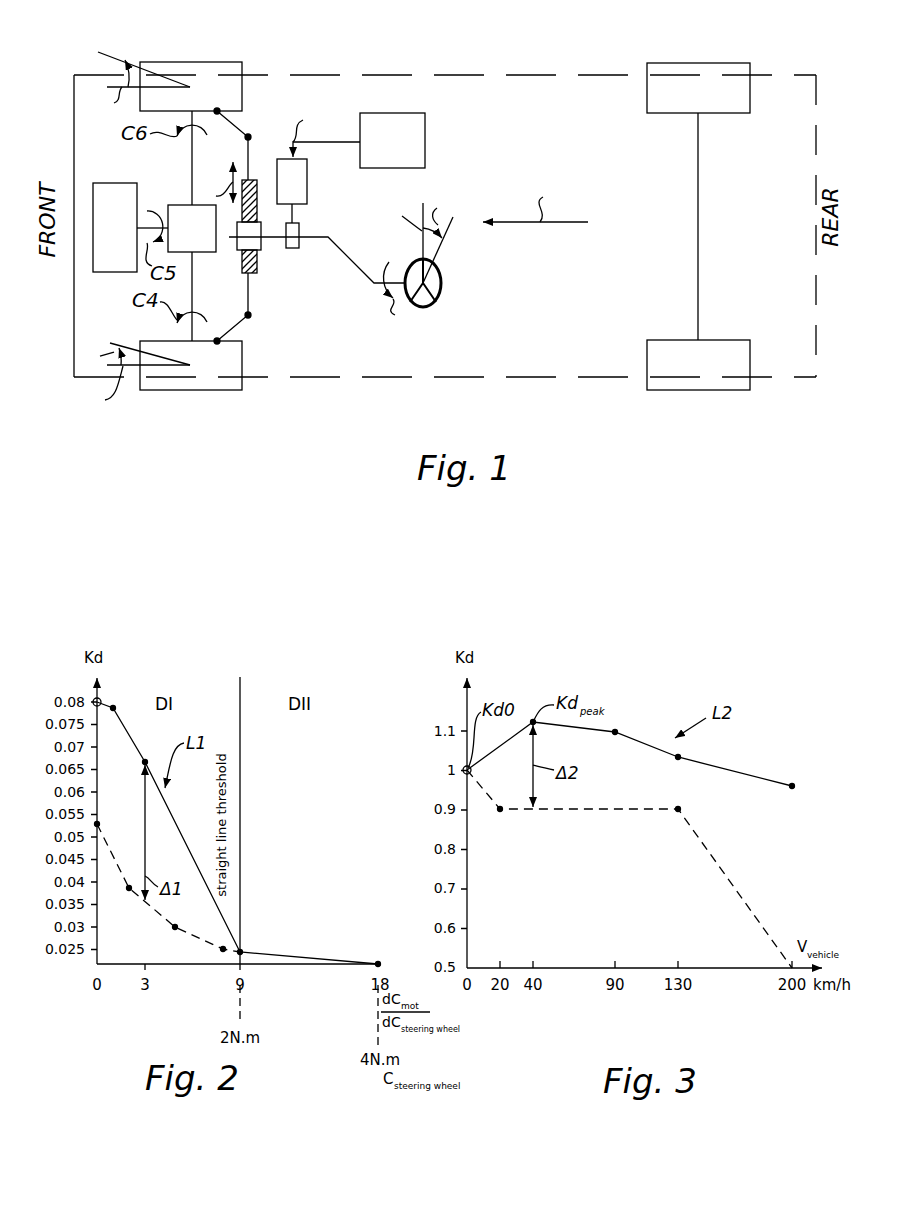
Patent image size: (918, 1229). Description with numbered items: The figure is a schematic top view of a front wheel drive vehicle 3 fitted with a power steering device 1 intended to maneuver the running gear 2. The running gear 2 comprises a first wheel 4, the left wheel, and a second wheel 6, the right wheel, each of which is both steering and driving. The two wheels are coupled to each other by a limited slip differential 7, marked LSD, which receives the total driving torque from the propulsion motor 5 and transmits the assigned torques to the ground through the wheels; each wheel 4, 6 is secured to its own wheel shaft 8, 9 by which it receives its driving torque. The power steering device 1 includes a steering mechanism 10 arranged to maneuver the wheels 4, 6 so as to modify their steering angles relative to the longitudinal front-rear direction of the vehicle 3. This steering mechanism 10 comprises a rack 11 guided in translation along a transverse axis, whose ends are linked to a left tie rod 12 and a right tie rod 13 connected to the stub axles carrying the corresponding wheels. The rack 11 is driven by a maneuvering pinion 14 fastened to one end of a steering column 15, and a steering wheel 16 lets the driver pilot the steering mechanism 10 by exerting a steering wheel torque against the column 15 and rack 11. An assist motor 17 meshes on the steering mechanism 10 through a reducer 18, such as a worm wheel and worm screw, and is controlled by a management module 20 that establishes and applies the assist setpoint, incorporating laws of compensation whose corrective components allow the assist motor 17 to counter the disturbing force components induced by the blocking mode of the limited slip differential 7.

The power steering device 1 is at (363, 357).
The running gear 2 is at (162, 238).
The vehicle 3 is at (553, 380).
The first wheel 4 is at (167, 390).
The motor 5 is at (107, 183).
The second wheel 6 is at (192, 62).
The limited slip differential 7 is at (180, 205).
The wheel shaft 8 is at (192, 283).
The wheel shaft 9 is at (192, 172).
The steering mechanism 10 is at (416, 229).
The rack 11 is at (257, 270).
The left tie rod 12 is at (228, 335).
The right tie rod 13 is at (232, 124).
The maneuvering pinion 14 is at (243, 242).
The steering column 15 is at (315, 237).
The steering wheel 16 is at (442, 283).
The assist motor 17 is at (298, 182).
The reducer 18 is at (296, 223).
The management module 20 is at (413, 132).